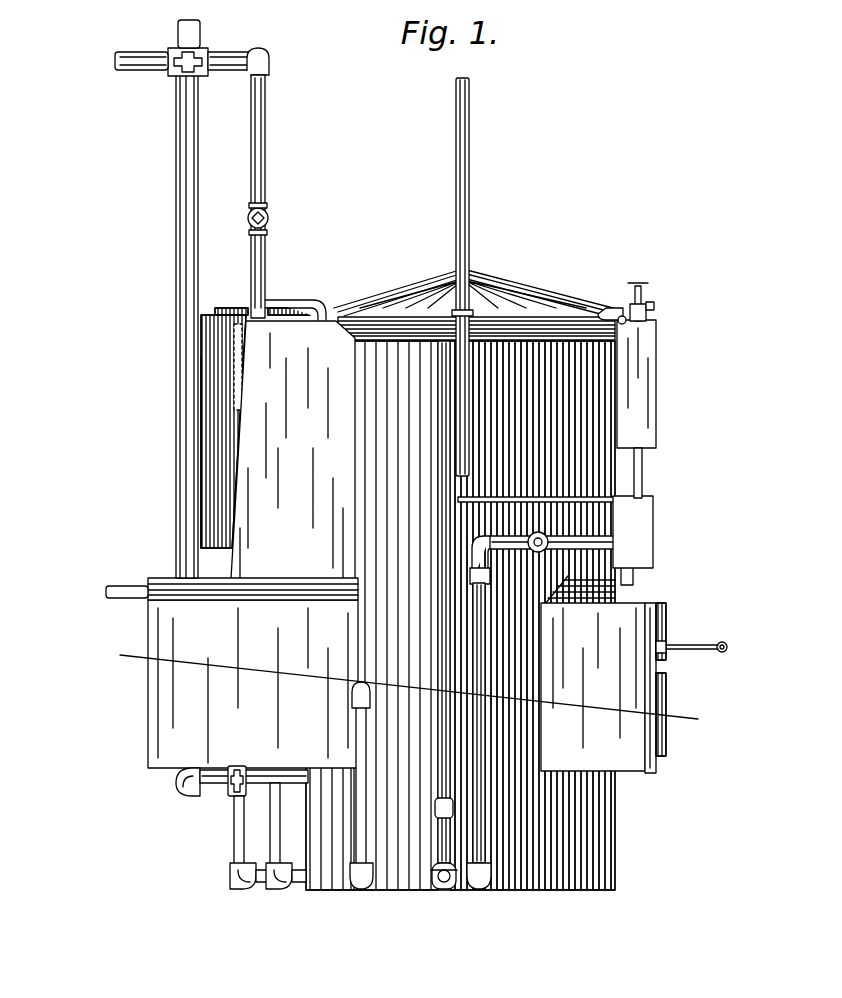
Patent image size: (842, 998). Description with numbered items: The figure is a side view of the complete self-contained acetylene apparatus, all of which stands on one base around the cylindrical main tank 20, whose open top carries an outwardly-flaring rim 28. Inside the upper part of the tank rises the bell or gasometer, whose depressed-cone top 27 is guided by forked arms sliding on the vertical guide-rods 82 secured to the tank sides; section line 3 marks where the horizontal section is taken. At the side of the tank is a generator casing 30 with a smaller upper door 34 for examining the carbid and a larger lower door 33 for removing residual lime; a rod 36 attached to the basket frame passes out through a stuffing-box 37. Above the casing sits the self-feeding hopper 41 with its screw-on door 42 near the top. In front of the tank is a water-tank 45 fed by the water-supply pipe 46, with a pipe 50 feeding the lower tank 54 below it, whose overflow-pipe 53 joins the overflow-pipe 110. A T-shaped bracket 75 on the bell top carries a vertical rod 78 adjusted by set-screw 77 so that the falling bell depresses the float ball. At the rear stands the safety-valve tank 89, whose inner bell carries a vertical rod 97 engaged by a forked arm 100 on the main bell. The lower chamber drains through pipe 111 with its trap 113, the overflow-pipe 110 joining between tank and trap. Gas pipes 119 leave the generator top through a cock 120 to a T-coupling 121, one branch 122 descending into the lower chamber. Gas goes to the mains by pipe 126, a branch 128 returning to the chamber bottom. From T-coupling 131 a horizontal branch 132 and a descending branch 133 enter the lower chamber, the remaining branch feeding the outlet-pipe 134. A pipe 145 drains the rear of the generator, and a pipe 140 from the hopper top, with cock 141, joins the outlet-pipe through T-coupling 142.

The section line 3 is at (392, 692).
The main tank 20 is at (460, 615).
The top of the bell 27 is at (478, 275).
The outwardly-flaring rim 28 is at (412, 334).
The casing 30 is at (402, 686).
The lower door 33 is at (660, 695).
The upper door 34 is at (660, 611).
The rod 36 is at (696, 636).
The stuffing-box 37 is at (659, 642).
The hopper 41 is at (292, 458).
The door 42 is at (234, 358).
The water-tank 45 is at (649, 375).
The water-supply pipe 46 is at (619, 313).
The pipe 50 is at (635, 466).
The overflow-pipe 53 is at (622, 491).
The tank 54 is at (645, 508).
The T-shaped bracket 75 is at (606, 299).
The set-screw 77 is at (647, 298).
The vertical rod 78 is at (634, 273).
The vertical guide-rod 82 is at (461, 159).
The safety-valve tank 89 is at (193, 431).
The vertical rod 97 is at (222, 299).
The forked arm 100 is at (282, 291).
The overflow-pipe 110 is at (431, 466).
The drain pipe 111 is at (436, 882).
The trap 113 is at (428, 850).
The gas pipe 119 is at (626, 564).
The cock 120 is at (618, 527).
The T-coupling 121 is at (462, 566).
The branch pipe 122 is at (478, 860).
The gas main pipe 126 is at (122, 591).
The branch pipe 128 is at (266, 833).
The T-coupling 131 is at (222, 786).
The horizontal branch 132 is at (298, 765).
The branch pipe 133 is at (229, 832).
The outlet-pipe 134 is at (168, 104).
The pipe 140 is at (258, 104).
The cock 141 is at (259, 209).
The T-coupling 142 is at (192, 42).
The pipe 145 is at (348, 723).